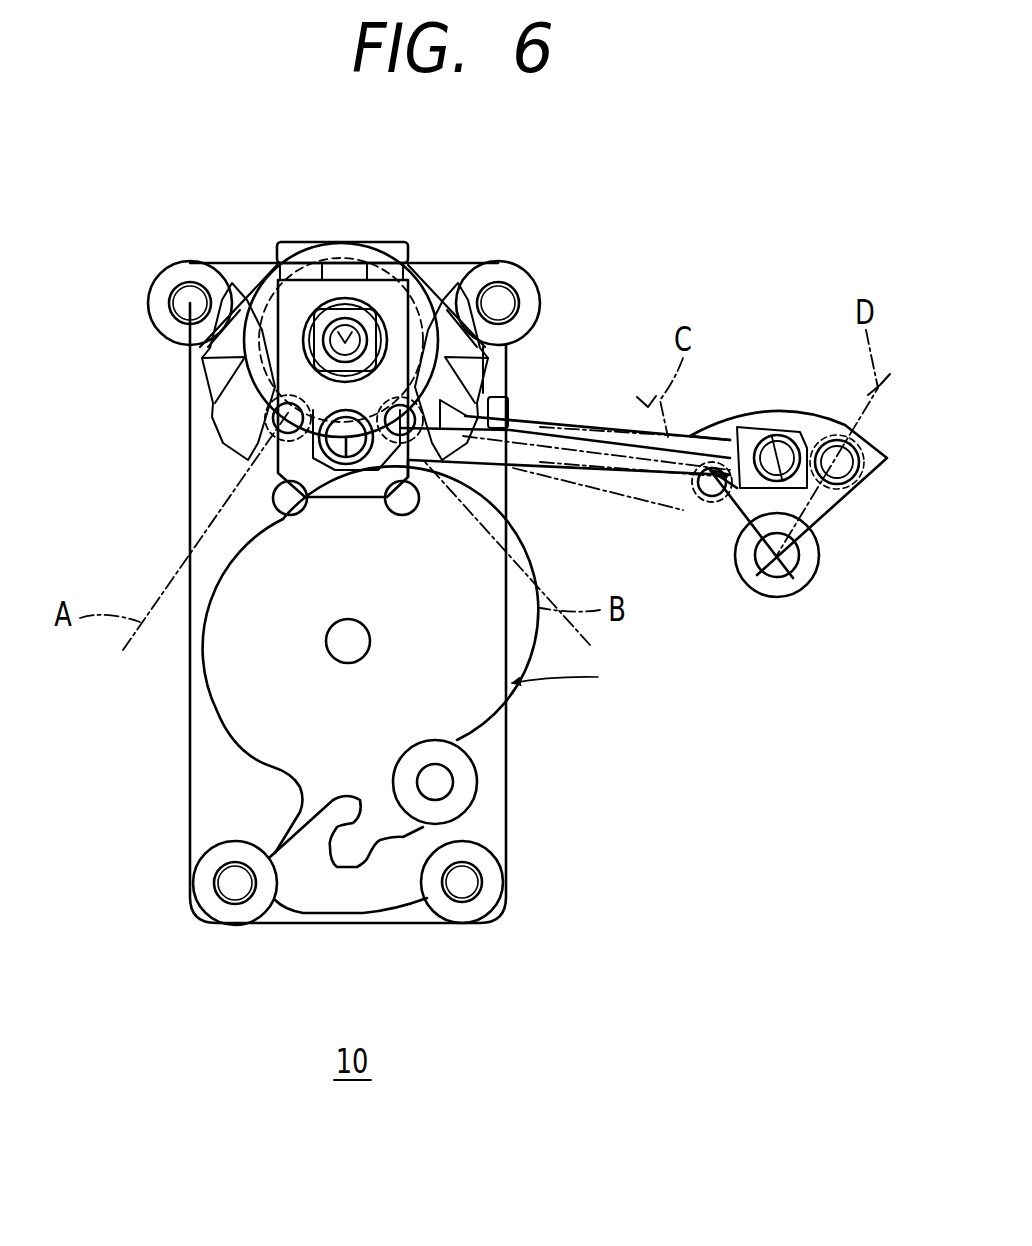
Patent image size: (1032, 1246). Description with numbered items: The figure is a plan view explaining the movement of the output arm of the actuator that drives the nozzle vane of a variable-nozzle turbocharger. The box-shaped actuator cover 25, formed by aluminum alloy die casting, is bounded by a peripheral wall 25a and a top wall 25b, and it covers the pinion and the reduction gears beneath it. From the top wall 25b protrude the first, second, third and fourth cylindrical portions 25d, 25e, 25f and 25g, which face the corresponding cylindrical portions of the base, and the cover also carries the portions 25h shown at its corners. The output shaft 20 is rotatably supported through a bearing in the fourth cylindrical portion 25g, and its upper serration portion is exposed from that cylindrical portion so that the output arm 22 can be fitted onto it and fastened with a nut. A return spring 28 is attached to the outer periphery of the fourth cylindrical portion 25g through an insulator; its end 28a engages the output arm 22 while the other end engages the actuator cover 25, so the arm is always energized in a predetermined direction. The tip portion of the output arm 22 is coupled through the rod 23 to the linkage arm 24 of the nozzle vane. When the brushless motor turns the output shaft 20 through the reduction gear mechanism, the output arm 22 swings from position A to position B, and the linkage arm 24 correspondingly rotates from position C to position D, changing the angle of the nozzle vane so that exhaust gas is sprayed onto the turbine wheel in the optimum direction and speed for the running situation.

The output shaft 20 is at (362, 326).
The output arm 22 is at (275, 280).
The rod 23 is at (572, 480).
The linkage arm 24 is at (830, 510).
The actuator cover 25 is at (576, 677).
The peripheral wall 25a is at (190, 790).
The top wall 25b is at (230, 688).
The first cylindrical portion 25d is at (370, 860).
The second cylindrical portion 25e is at (455, 778).
The third cylindrical portion 25f is at (370, 652).
The fourth cylindrical portion 25g is at (478, 352).
The roller 25h is at (183, 295).
The return spring 28 is at (428, 288).
The end of return spring 28a is at (317, 257).